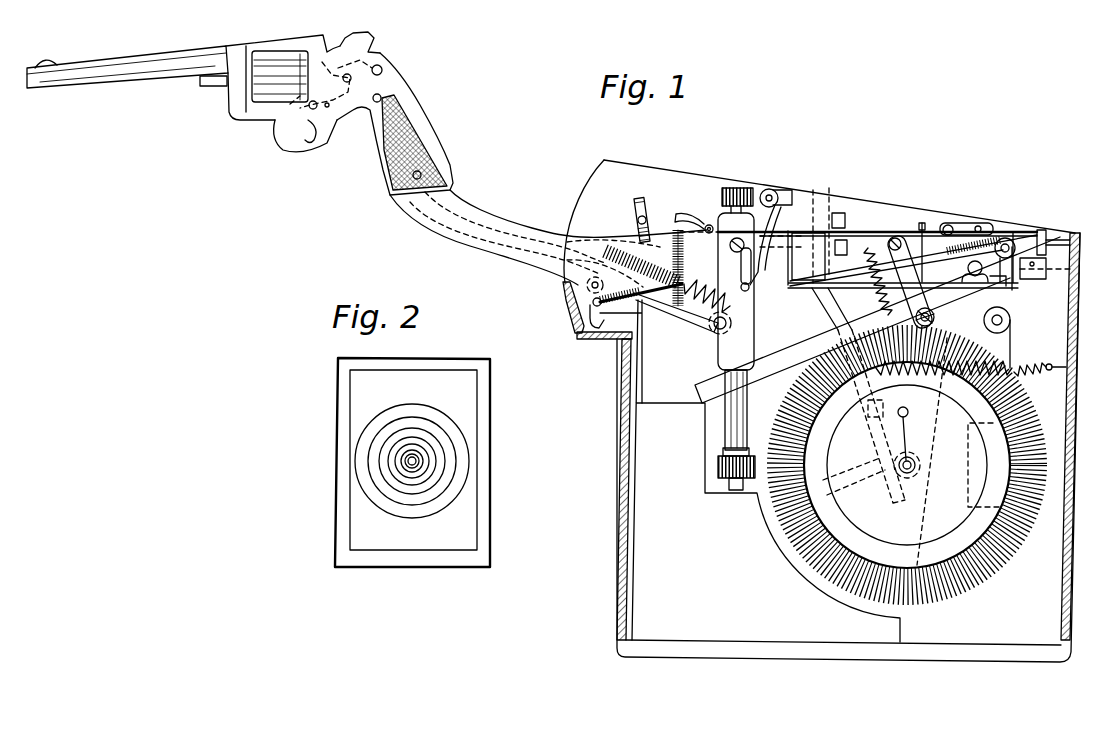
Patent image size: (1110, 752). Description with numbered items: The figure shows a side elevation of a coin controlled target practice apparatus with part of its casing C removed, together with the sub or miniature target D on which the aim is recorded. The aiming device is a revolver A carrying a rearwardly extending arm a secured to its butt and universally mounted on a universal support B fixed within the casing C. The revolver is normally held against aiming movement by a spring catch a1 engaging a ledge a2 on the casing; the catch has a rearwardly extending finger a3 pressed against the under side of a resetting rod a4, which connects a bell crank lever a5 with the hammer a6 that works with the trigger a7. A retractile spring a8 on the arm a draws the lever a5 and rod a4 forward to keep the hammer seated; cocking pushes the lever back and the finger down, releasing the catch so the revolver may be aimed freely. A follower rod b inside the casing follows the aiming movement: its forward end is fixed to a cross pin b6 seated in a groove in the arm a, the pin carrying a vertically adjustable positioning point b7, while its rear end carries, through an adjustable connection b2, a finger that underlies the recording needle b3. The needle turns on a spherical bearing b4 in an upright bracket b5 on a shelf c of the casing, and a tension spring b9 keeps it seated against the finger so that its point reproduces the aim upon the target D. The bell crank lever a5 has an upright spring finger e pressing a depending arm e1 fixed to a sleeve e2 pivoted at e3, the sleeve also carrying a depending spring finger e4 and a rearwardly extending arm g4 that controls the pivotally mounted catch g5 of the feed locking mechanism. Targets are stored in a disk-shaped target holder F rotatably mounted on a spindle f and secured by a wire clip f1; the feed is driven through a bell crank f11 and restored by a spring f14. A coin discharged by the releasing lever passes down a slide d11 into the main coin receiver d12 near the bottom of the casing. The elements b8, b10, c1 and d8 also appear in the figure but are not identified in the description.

In FIG. 1, the revolver A is at (260, 38).
In FIG. 1, the rearwardly extending arm a is at (485, 215).
In FIG. 1, the spring catch a1 is at (592, 312).
In FIG. 1, the ledge a2 is at (614, 340).
In FIG. 1, the rearwardly extending finger a3 is at (624, 298).
In FIG. 1, the resetting rod a4 is at (700, 318).
In FIG. 1, the bell crank lever a5 is at (735, 322).
In FIG. 1, the revolver cock or hammer a6 is at (367, 54).
In FIG. 1, the trigger a7 is at (299, 130).
In FIG. 1, the retractile spring a8 is at (618, 252).
In FIG. 1, the universal support B is at (661, 375).
In FIG. 1, the casing C is at (620, 457).
In FIG. 2, the sub or miniature target D is at (412, 462).
In FIG. 1, the target holder or magazine F is at (907, 462).
In FIG. 1, the follower rod b is at (882, 231).
In FIG. 1, the adjustable connection b2 is at (1041, 237).
In FIG. 1, the recording needle b3 is at (942, 229).
In FIG. 1, the spherical bearing b4 is at (1006, 237).
In FIG. 1, the upright bracket b5 is at (1017, 280).
In FIG. 1, the cross pin b6 is at (708, 225).
In FIG. 1, the vertically adjustable positioning point b7 is at (650, 214).
In FIG. 1, the rack b8 is at (697, 268).
In FIG. 1, the tension spring b9 is at (977, 228).
In FIG. 1, the pin b10 is at (922, 220).
In FIG. 1, the shelf c is at (1003, 284).
In FIG. 1, the frame plate c1 is at (806, 200).
In FIG. 1, the block d8 is at (1047, 268).
In FIG. 1, the slide d11 is at (877, 370).
In FIG. 1, the main coin receiver d12 is at (766, 471).
In FIG. 1, the upright spring finger e is at (748, 284).
In FIG. 1, the depending arm e1 is at (752, 272).
In FIG. 1, the sleeve e2 is at (790, 197).
In FIG. 1, the pivot e3 is at (776, 190).
In FIG. 1, the depending spring finger e4 is at (768, 192).
In FIG. 1, the spindle f is at (914, 471).
In FIG. 1, the wire clip f1 is at (903, 430).
In FIG. 1, the bell crank lever f11 is at (935, 315).
In FIG. 1, the spring f14 is at (1023, 368).
In FIG. 1, the rearwardly extending arm g4 is at (836, 212).
In FIG. 1, the pivotally mounted catch g5 is at (890, 235).